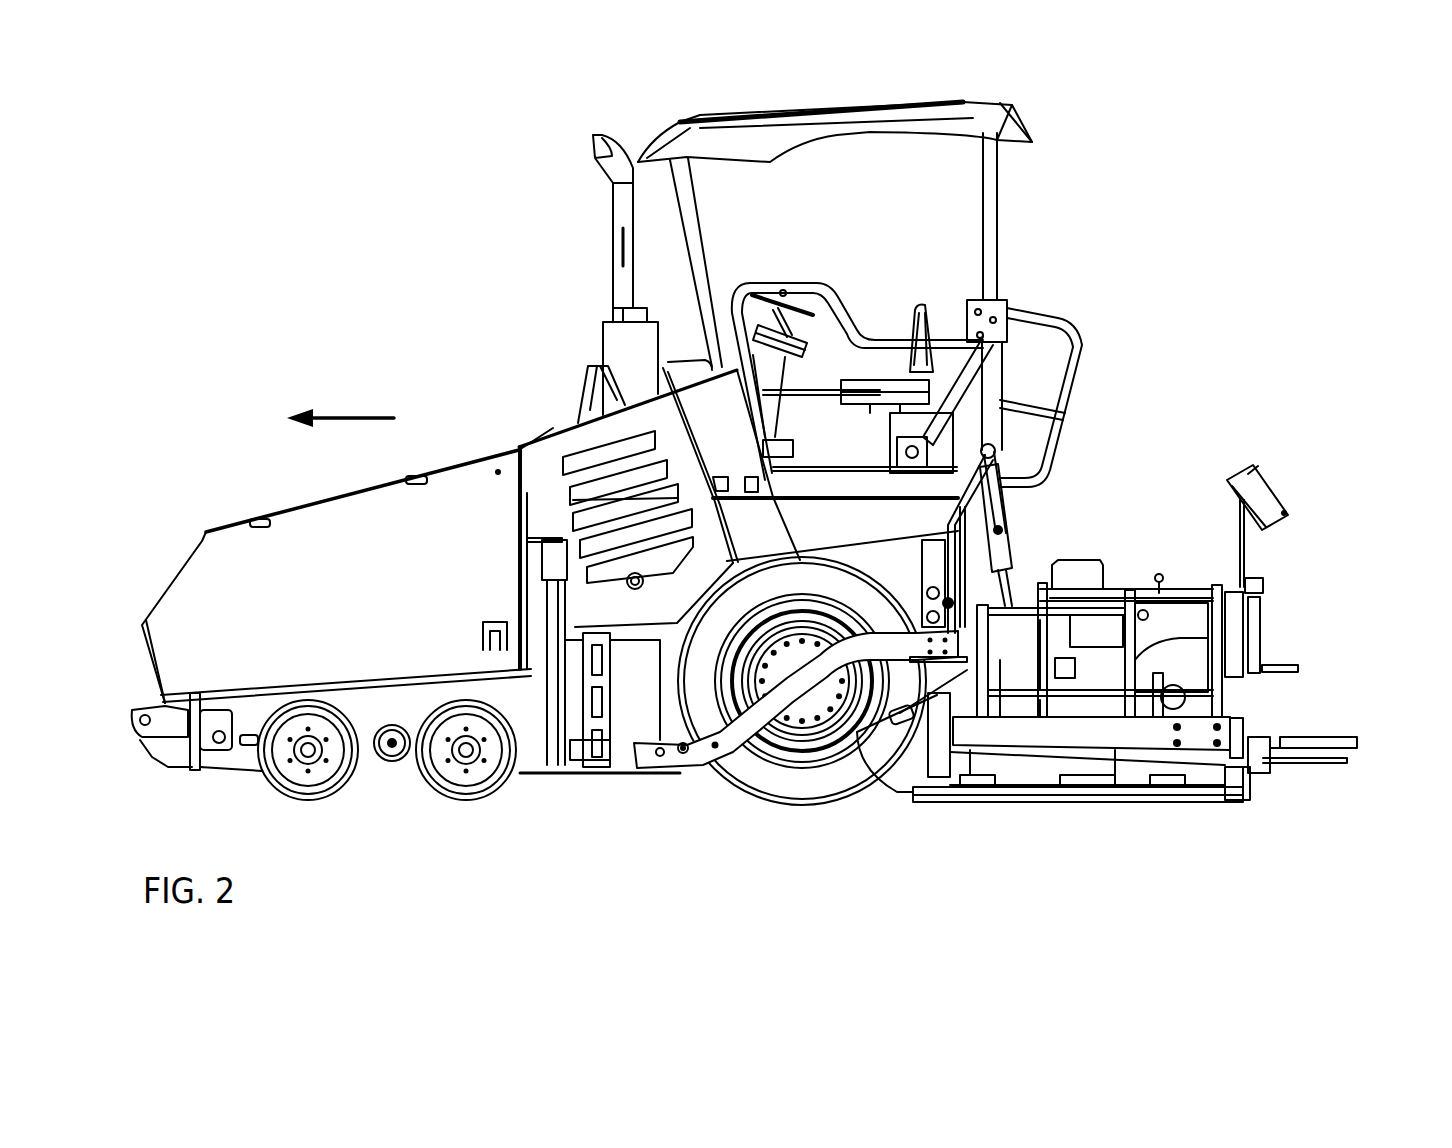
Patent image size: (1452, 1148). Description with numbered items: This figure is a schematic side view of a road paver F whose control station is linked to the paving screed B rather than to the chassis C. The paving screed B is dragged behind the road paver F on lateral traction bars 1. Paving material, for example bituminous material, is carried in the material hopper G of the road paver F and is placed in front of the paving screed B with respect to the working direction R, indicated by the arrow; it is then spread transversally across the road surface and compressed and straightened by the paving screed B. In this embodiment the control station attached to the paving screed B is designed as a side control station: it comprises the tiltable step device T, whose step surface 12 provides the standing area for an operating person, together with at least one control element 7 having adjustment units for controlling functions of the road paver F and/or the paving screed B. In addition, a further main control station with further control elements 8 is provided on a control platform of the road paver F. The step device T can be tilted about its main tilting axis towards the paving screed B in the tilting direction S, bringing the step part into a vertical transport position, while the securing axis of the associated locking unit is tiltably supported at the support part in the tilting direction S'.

The road paver F is at (462, 362).
The working direction R is at (340, 407).
The material hopper G is at (300, 532).
The further control elements 8 is at (812, 322).
The tilting direction S' is at (907, 355).
The tilting direction S is at (1288, 477).
The control element 7 is at (1268, 490).
The chassis C is at (910, 522).
The lateral traction bars 1 is at (741, 723).
The step surface 12 is at (1340, 737).
The tiltable step device T is at (1308, 792).
The paving screed B is at (1074, 822).